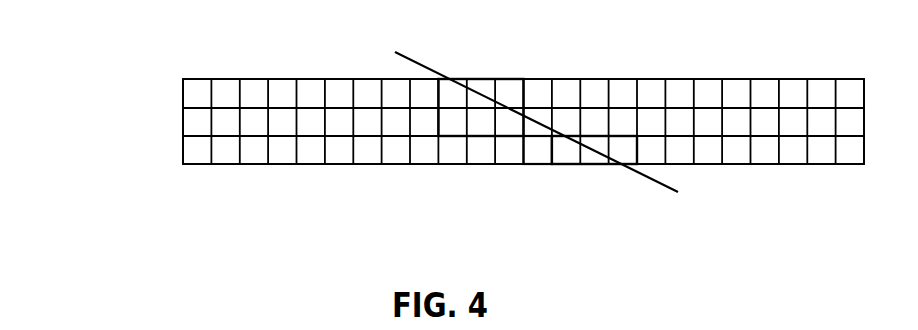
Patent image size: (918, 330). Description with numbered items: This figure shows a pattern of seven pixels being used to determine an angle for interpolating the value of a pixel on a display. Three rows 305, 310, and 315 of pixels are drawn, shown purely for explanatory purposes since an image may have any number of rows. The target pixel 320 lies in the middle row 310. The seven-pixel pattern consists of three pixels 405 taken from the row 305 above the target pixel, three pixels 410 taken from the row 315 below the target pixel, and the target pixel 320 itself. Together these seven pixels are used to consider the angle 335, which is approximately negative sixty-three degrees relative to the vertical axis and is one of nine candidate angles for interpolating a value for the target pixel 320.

The row 305 is at (145, 93).
The row 310 is at (145, 121).
The row 315 is at (145, 149).
The target pixel 320 is at (527, 152).
The angle 335 is at (528, 108).
The pixels 405 is at (524, 64).
The pixels 410 is at (637, 180).